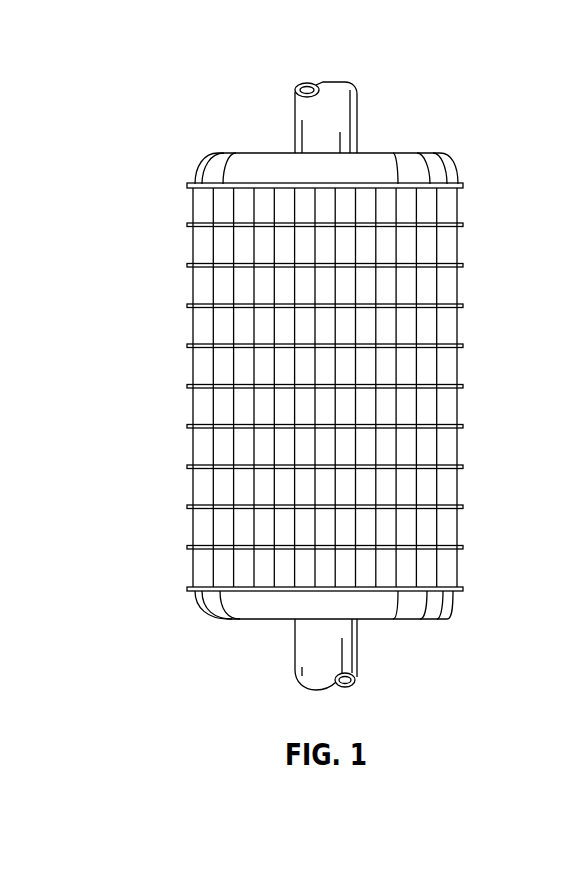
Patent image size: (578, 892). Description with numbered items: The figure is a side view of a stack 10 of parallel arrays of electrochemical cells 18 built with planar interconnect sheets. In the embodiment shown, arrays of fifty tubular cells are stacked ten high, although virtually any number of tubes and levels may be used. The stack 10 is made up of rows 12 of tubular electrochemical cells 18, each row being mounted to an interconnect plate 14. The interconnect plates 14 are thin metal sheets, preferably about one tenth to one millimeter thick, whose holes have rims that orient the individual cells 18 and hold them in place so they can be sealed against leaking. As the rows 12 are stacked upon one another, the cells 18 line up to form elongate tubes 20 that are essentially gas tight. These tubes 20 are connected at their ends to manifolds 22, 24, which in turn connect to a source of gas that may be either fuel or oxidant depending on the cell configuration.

The stack 10 is at (321, 381).
The rows 12 is at (331, 387).
The interconnect plates 14 is at (190, 305).
The electrochemical cells 18 is at (450, 283).
The elongate tubes 20 is at (332, 155).
The manifold 22 is at (446, 153).
The manifold 24 is at (405, 622).